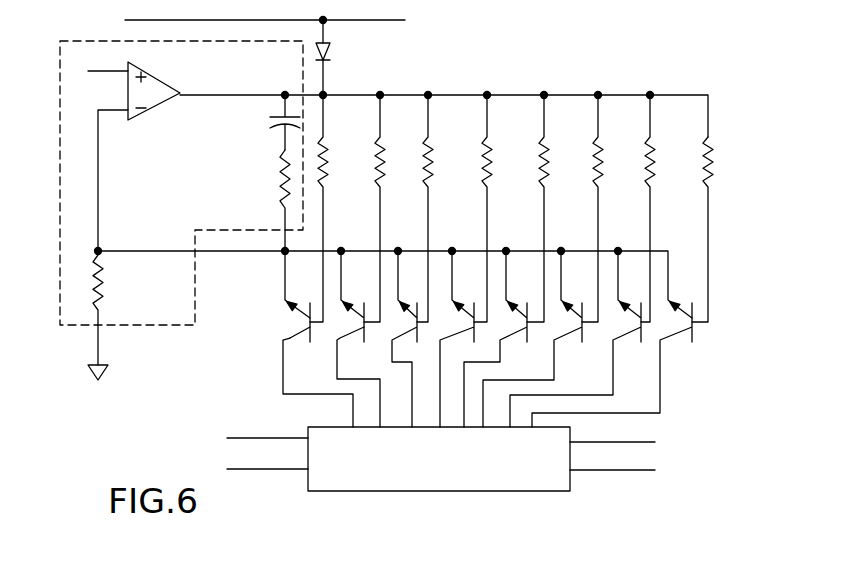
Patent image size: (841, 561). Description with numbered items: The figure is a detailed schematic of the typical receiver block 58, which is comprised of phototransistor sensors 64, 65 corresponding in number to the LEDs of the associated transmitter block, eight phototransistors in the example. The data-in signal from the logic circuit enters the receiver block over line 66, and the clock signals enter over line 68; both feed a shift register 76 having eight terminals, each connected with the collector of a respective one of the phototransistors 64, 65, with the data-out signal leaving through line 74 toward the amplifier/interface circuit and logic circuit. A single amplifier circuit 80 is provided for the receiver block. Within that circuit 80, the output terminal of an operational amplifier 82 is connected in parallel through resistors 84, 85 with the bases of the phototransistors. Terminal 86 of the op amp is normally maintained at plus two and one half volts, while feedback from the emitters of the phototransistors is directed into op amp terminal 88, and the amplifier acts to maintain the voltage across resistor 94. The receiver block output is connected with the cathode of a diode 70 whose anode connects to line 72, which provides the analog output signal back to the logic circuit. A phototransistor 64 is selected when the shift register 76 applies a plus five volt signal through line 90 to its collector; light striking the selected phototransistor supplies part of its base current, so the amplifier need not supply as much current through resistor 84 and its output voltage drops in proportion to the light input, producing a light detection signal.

The amplifier circuit 80 is at (77, 40).
The line 72 is at (125, 19).
The op amp terminal 86 is at (125, 70).
The op amp terminal 88 is at (125, 110).
The operational amplifier 82 is at (166, 83).
The diode 70 is at (329, 51).
The receiver block 58 is at (492, 88).
The resistor 84 is at (328, 163).
The resistor 85 is at (386, 158).
The resistor 94 is at (103, 291).
The phototransistor 64 is at (290, 334).
The phototransistor 65 is at (336, 344).
The line 90 is at (283, 372).
The line 66 is at (286, 437).
The line 68 is at (286, 468).
The line 74 is at (643, 442).
The shift register 76 is at (530, 492).